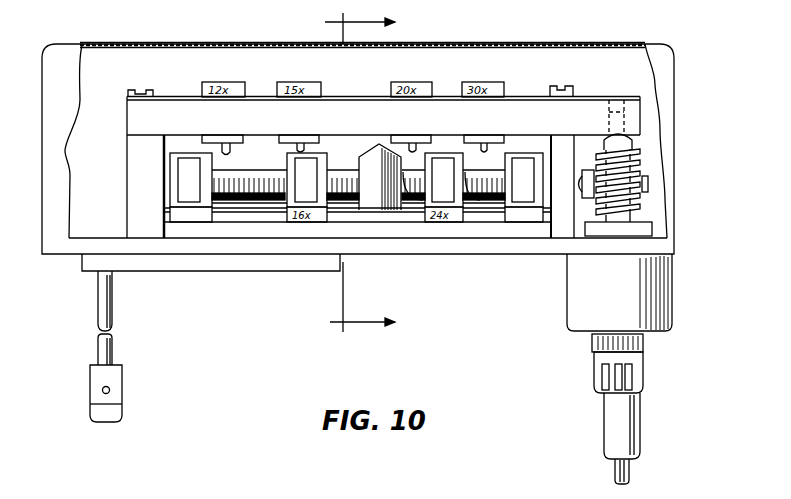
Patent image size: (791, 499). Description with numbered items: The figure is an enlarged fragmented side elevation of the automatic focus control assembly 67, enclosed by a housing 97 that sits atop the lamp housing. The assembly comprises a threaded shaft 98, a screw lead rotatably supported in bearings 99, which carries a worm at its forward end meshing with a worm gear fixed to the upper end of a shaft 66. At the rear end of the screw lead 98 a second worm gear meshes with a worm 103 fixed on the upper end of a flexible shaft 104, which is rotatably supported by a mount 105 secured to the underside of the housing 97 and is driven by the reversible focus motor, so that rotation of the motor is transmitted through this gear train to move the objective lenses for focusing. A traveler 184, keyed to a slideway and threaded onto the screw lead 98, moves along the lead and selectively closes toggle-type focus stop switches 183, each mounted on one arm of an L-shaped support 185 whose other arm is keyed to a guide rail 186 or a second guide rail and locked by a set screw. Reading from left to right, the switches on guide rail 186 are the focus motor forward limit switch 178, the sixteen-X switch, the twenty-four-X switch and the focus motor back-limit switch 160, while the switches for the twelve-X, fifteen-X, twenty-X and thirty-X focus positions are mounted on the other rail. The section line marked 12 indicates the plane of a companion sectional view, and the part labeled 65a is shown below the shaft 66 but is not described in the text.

The focusing control assembly 67 is at (607, 44).
The section line 12- 12 is at (385, 175).
The focus stop switches 183 is at (226, 152).
The L-shaped support 185 is at (304, 148).
The bearings 99 is at (132, 196).
The focus motor forward limit switch 178 is at (190, 222).
The focus motor back-limit switch 160 is at (507, 221).
The threaded shaft 98 is at (263, 203).
The traveler 184 is at (372, 209).
The guide rail 186 is at (285, 232).
The housing 97 is at (427, 246).
The worm 103 is at (637, 156).
The mount 105 is at (672, 294).
The flexible shaft 104 is at (630, 467).
The shaft 66 is at (100, 301).
The plug 65a is at (92, 410).